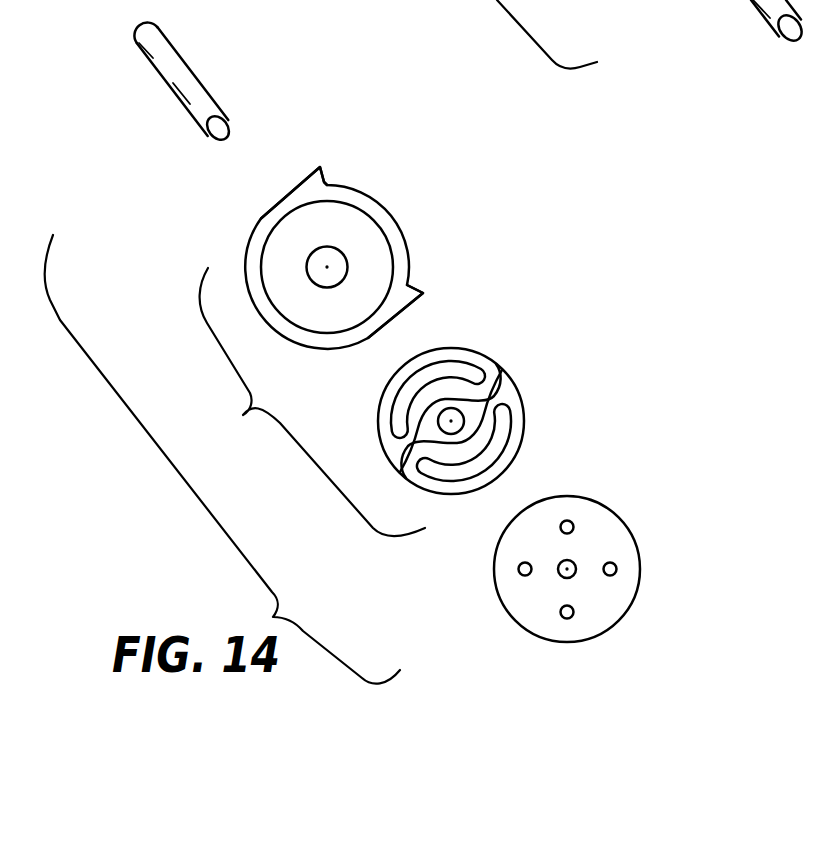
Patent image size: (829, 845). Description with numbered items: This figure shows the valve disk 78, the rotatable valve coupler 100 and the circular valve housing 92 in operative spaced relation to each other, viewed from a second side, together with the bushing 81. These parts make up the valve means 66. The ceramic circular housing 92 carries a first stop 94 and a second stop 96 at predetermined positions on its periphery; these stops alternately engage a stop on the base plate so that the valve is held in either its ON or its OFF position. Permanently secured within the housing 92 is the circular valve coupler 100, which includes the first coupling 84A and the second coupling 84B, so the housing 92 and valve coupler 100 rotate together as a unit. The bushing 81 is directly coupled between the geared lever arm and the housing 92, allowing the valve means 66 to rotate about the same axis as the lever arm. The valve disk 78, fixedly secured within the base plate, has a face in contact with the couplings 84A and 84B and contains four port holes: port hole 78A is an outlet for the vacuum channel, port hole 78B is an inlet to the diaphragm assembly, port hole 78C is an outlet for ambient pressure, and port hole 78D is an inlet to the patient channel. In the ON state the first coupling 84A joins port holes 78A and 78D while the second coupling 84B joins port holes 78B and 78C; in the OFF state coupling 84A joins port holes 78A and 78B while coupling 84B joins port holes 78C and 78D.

The bushing 81 is at (182, 57).
The circular valve housing 92 is at (397, 220).
The first stop 94 is at (322, 167).
The second stop 96 is at (422, 292).
The rotatable valve coupler 100 is at (463, 408).
The first coupling 84A is at (413, 391).
The second coupling 84B is at (495, 440).
The valve means 66 is at (312, 402).
The valve disk 78 is at (560, 584).
The port hole 78A is at (518, 569).
The port hole 78B is at (567, 619).
The port hole 78C is at (617, 569).
The port hole 78D is at (568, 521).